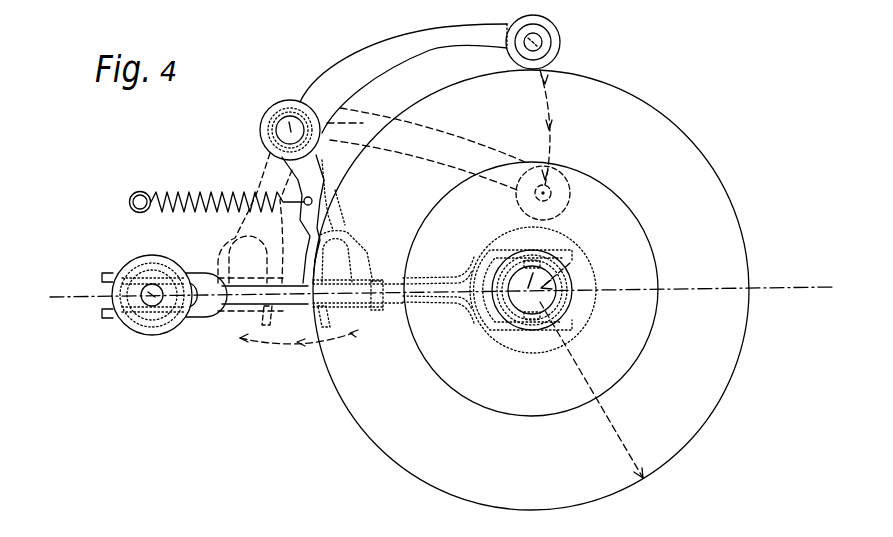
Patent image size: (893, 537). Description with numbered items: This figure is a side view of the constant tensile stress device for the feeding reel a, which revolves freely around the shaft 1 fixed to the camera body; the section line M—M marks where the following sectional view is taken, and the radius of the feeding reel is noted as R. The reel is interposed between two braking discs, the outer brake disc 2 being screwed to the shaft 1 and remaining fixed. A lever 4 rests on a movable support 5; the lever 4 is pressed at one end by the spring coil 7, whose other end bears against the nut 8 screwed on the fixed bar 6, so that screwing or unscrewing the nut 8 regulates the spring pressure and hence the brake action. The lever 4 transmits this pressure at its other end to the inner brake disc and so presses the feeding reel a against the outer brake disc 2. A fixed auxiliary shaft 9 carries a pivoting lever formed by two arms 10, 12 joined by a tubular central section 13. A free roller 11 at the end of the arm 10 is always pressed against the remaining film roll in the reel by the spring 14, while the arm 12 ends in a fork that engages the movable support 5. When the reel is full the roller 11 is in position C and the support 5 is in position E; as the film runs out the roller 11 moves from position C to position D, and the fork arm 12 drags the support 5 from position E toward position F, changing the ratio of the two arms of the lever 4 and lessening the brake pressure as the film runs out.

The shaft 1 is at (533, 290).
The outer brake disc 2 is at (633, 362).
The lever 4 is at (413, 303).
The movable support 5 is at (311, 313).
The fixed bar 6 is at (139, 325).
The spring coil 7 is at (157, 325).
The nut 8 is at (170, 325).
The fixed auxiliary shaft 9 is at (287, 120).
The arm 10 is at (403, 78).
The free roller 11 is at (561, 25).
The arm 12 is at (329, 219).
The tubular central section 13 is at (260, 127).
The spring 14 is at (221, 189).
The feeding reel a is at (531, 290).
The position C is at (560, 116).
The position D is at (457, 171).
The position E is at (348, 243).
The position F is at (255, 239).
The section line M— M is at (441, 275).
The radius of the feeding reel R is at (591, 369).